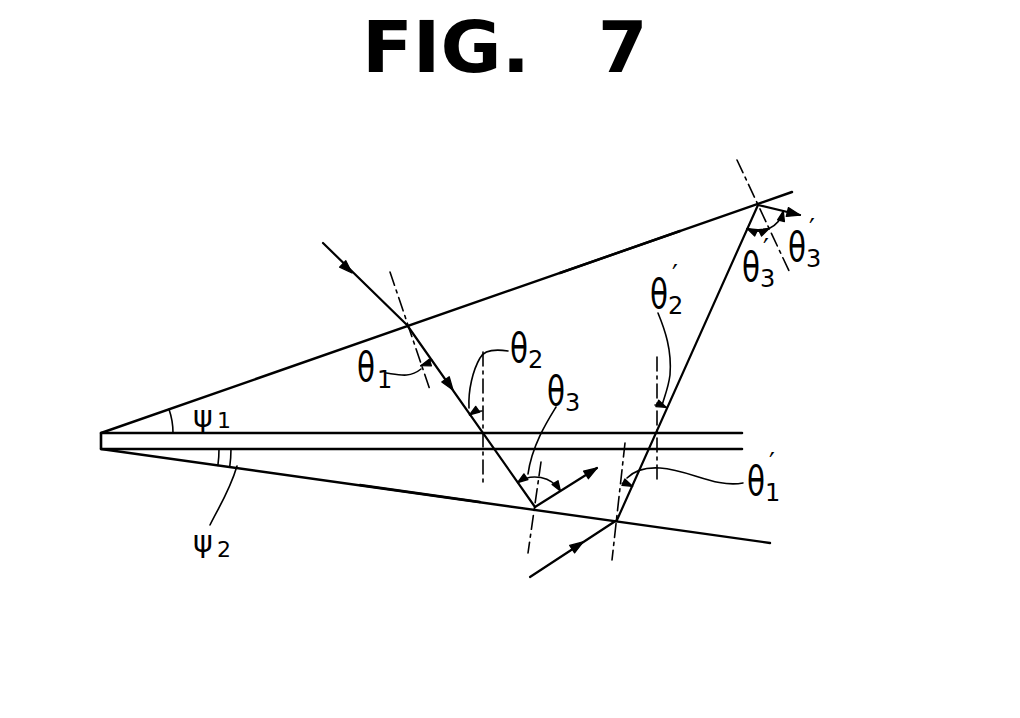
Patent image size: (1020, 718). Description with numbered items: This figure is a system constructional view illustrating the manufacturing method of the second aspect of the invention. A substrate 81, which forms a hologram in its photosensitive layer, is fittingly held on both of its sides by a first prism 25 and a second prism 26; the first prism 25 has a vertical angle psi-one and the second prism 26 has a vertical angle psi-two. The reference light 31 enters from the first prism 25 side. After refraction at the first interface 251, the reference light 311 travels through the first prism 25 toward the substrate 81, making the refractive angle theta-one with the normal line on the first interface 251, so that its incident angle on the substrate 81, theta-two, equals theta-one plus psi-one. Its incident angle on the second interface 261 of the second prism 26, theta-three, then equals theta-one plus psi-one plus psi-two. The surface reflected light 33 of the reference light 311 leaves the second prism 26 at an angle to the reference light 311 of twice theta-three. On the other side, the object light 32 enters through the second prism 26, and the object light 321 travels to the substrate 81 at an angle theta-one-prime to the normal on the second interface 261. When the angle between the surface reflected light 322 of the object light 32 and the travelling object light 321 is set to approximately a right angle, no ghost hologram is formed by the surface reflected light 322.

The substrate 81 is at (115, 436).
The first prism 25 is at (300, 378).
The first interface 251 is at (618, 250).
The second prism 26 is at (318, 462).
The second interface 261 is at (418, 495).
The reference light 31 is at (333, 252).
The reference light travelling through the first prism 311 is at (420, 348).
The object light 32 is at (553, 562).
The object light travelling to the substrate 321 is at (695, 348).
The surface reflected light of the object light 322 is at (778, 198).
The surface reflected light of the reference light 33 is at (570, 484).